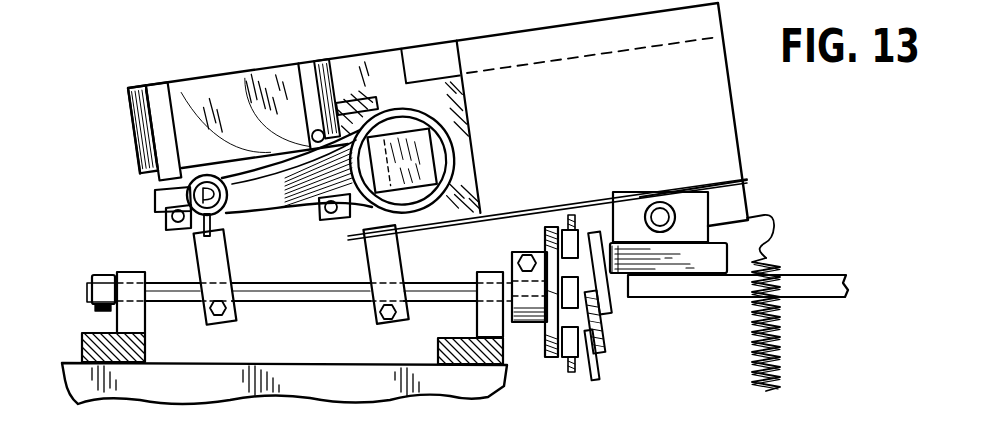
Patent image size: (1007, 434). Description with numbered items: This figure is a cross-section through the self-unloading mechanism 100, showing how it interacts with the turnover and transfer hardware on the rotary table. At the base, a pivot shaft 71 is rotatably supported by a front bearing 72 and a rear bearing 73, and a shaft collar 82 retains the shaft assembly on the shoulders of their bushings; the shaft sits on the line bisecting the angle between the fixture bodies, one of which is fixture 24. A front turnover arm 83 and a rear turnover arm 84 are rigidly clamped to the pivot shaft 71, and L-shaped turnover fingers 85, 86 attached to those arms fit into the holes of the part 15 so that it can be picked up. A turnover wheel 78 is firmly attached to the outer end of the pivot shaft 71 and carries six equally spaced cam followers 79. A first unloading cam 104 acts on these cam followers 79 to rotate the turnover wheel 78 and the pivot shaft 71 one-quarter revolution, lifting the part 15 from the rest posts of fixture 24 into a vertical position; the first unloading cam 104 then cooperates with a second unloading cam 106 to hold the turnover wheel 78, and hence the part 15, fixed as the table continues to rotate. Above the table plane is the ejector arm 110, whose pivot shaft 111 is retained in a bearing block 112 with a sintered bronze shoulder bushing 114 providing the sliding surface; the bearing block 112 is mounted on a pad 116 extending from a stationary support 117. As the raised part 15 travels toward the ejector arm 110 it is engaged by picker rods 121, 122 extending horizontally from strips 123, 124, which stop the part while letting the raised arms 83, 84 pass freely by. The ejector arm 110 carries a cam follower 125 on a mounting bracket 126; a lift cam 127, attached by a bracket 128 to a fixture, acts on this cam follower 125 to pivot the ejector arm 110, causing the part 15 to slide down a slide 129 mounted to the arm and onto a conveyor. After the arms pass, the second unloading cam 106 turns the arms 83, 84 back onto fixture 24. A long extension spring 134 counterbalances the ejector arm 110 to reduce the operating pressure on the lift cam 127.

The self-unloading mechanism 100 is at (110, 88).
The ejector arm 110 is at (140, 142).
The strip 124 is at (158, 92).
The part 15 is at (265, 182).
The strip 123 is at (310, 70).
The picker rod 121 is at (320, 130).
The turnover finger 85 is at (400, 155).
The turnover finger 86 is at (175, 197).
The picker rod 122 is at (168, 222).
The rear turnover arm 84 is at (212, 258).
The front turnover arm 83 is at (380, 262).
The pivot shaft 71 is at (288, 298).
The rear bearing 73 is at (131, 272).
The shaft collar 82 is at (100, 277).
The front bearing 72 is at (488, 317).
The fixture 24 is at (70, 365).
The cam follower 79 is at (545, 250).
The turnover wheel 78 is at (549, 360).
The first unloading cam 104 is at (571, 215).
The second unloading cam 106 is at (570, 375).
The cam follower 125 is at (612, 297).
The lift cam 127 is at (606, 337).
The bracket 128 is at (599, 366).
The slide 129 is at (476, 223).
The sintered bronze shoulder bushing 114 is at (697, 196).
The bearing block 112 is at (693, 203).
The pivot shaft 111 is at (657, 204).
The pad 116 is at (713, 256).
The mounting bracket 126 is at (628, 258).
The stationary support 117 is at (820, 288).
The extension spring 134 is at (778, 333).